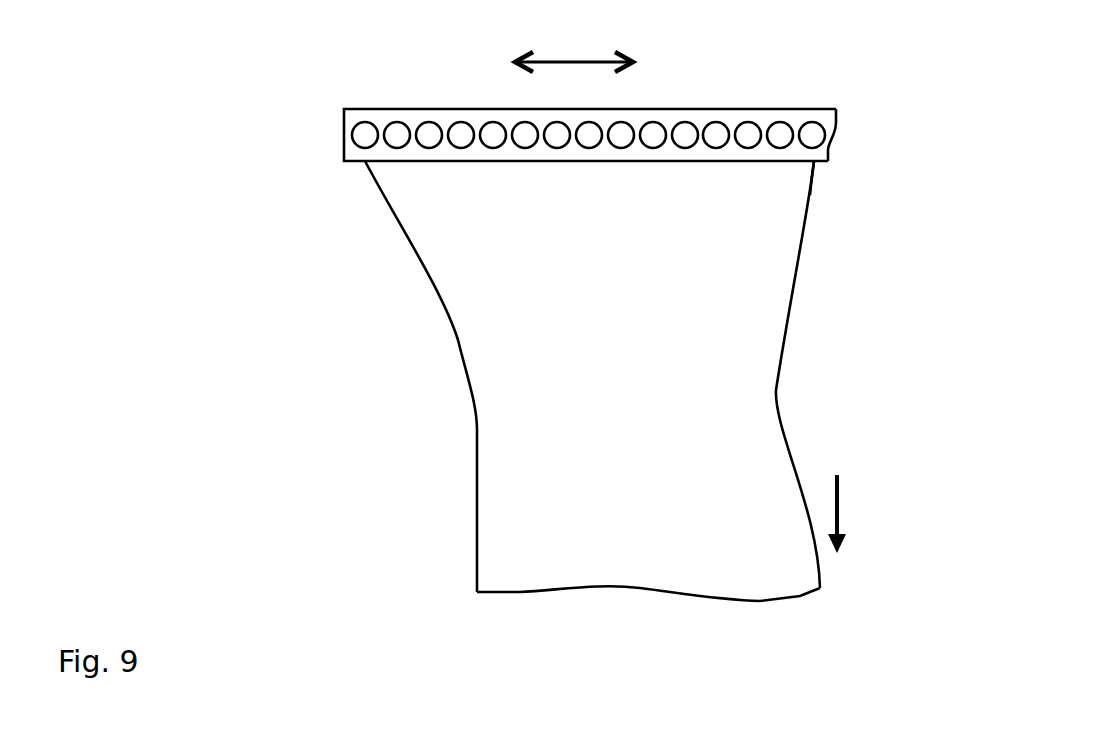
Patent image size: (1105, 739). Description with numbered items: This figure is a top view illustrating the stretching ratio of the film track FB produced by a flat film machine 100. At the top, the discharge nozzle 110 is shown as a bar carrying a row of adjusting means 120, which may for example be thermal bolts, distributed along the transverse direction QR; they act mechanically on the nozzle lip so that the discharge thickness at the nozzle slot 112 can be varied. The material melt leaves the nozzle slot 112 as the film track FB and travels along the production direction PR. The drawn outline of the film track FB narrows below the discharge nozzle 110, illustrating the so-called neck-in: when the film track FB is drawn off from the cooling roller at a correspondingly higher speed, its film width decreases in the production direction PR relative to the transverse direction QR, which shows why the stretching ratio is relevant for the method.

The flat film machine 100 is at (950, 162).
The discharge nozzle 110 is at (830, 161).
The nozzle slot 112 is at (800, 161).
The adjusting means 120 is at (748, 133).
The film track FB is at (489, 480).
The transverse direction QR is at (574, 47).
The production direction PR is at (852, 514).